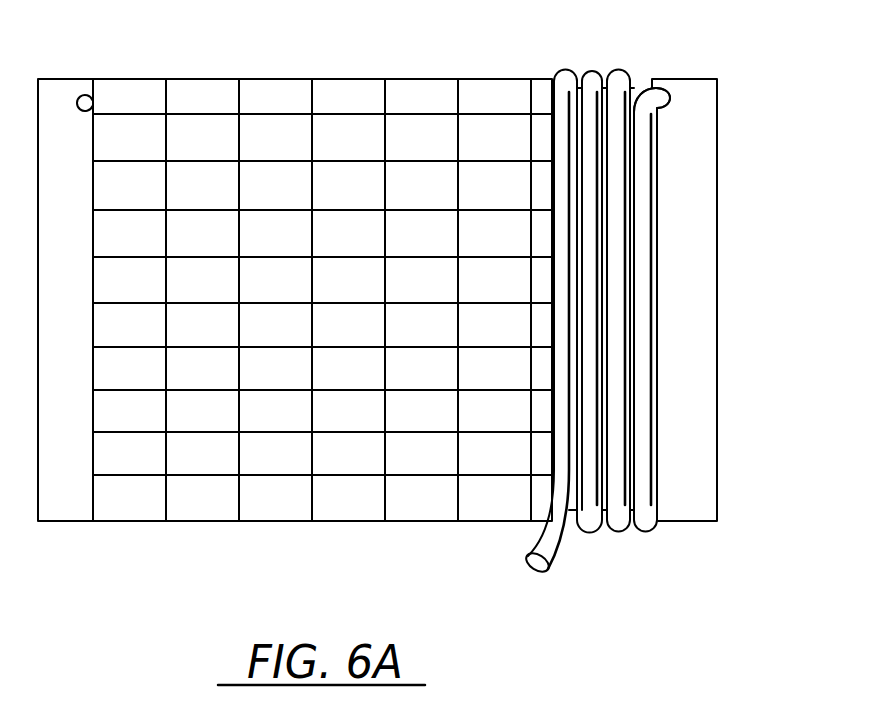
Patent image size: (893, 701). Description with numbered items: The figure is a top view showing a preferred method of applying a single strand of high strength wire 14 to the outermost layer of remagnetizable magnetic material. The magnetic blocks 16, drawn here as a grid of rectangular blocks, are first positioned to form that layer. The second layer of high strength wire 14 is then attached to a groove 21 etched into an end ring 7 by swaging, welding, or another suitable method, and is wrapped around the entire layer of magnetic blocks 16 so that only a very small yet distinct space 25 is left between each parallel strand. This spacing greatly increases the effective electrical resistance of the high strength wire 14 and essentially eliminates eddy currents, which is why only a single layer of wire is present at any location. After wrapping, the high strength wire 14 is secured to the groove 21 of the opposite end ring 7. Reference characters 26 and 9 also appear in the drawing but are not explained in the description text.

The end ring 7 is at (67, 87).
The hook 26 is at (94, 100).
The magnetic blocks 16 is at (543, 460).
The second layer of high strength wire 14 is at (647, 518).
The space 25 is at (576, 513).
The groove 21 is at (670, 97).
The assembly 9 is at (744, 574).